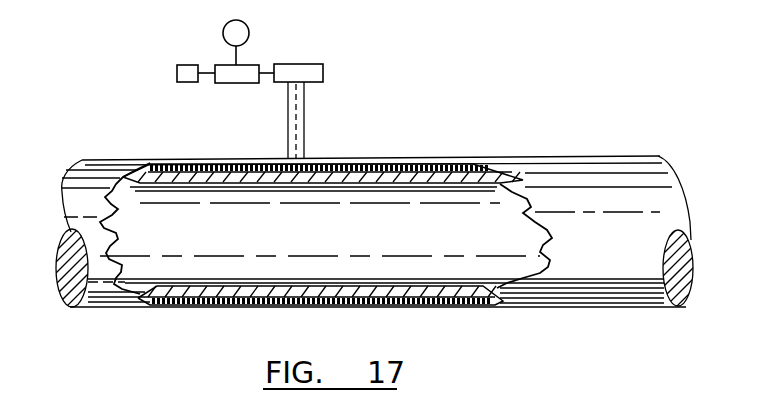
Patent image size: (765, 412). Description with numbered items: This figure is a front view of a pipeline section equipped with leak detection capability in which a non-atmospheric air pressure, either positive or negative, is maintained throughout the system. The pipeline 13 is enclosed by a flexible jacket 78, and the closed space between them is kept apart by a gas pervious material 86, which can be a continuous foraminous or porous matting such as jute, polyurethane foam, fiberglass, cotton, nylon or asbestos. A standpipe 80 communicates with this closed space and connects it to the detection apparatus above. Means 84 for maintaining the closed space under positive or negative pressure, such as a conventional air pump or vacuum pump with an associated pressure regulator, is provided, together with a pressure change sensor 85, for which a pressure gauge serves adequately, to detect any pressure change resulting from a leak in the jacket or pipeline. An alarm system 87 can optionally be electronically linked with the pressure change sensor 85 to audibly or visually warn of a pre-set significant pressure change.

The pipeline 13 is at (385, 249).
The jacket 78 is at (323, 143).
The standpipe 80 is at (280, 112).
The means for maintaining pressure 84 is at (225, 93).
The pressure change sensor 85 is at (270, 33).
The gas pervious material 86 is at (320, 322).
The alarm system 87 is at (172, 104).